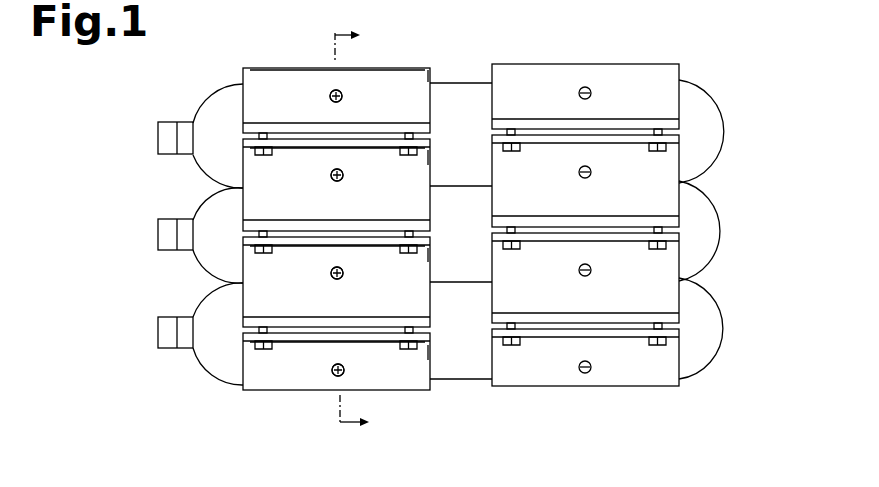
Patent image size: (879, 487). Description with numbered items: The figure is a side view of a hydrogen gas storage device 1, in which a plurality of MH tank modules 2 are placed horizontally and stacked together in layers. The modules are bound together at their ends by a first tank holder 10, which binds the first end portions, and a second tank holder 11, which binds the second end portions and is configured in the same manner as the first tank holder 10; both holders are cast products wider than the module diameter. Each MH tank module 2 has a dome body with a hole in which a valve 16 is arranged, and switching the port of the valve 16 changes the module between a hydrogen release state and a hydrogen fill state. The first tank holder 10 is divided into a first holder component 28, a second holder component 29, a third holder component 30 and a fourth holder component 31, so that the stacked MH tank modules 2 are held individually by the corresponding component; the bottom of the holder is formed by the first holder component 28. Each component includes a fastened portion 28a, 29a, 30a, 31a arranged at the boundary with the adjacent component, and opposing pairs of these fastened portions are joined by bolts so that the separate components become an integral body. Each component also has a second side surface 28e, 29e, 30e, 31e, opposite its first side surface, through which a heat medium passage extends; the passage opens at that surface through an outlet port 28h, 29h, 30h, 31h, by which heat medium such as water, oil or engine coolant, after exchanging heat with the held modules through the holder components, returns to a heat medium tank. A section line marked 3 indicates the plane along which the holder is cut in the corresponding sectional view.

The hydrogen gas storage device 1 is at (134, 379).
The MH tank module 2 is at (728, 100).
The section line 3 is at (361, 230).
The first tank holder 10 is at (407, 66).
The second tank holder 11 is at (523, 64).
The valve 16 is at (158, 128).
The first holder component 28 is at (245, 392).
The fastened portion 28a is at (291, 343).
The second side surface 28e is at (425, 362).
The outlet port 28h is at (344, 370).
The second holder component 29 is at (243, 311).
The fastened portion 29a is at (243, 262).
The second side surface 29e is at (425, 265).
The outlet port 29h is at (343, 274).
The third holder component 30 is at (243, 214).
The fastened portion 30a is at (243, 168).
The second side surface 30e is at (424, 168).
The outlet port 30h is at (343, 176).
The fourth holder component 31 is at (243, 78).
The fastened portion 31a is at (283, 122).
The second side surface 31e is at (428, 76).
The outlet port 31h is at (342, 97).